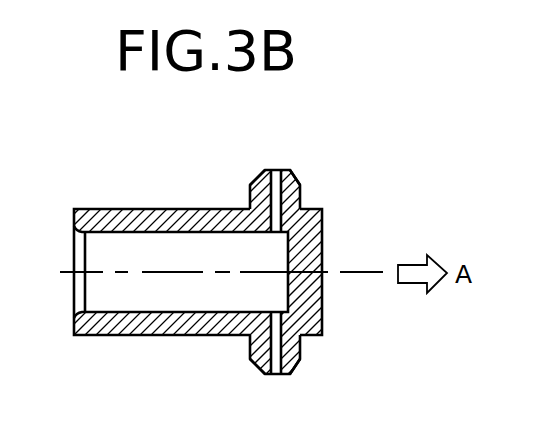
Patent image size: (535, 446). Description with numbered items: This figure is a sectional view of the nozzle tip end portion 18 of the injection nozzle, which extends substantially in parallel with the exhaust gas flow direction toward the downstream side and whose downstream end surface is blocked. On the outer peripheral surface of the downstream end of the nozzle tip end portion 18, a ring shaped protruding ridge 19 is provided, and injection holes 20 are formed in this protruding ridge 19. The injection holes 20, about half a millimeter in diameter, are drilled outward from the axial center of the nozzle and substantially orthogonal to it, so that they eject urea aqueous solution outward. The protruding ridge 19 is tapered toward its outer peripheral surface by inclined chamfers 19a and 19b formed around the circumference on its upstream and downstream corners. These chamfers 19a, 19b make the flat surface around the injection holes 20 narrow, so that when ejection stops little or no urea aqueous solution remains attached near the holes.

The nozzle tip end portion 18 is at (173, 336).
The ring shaped protruding ridge 19 is at (250, 197).
The inclined chamfer 19a is at (257, 369).
The inclined chamfer 19b is at (298, 368).
The injection holes 20 is at (277, 168).